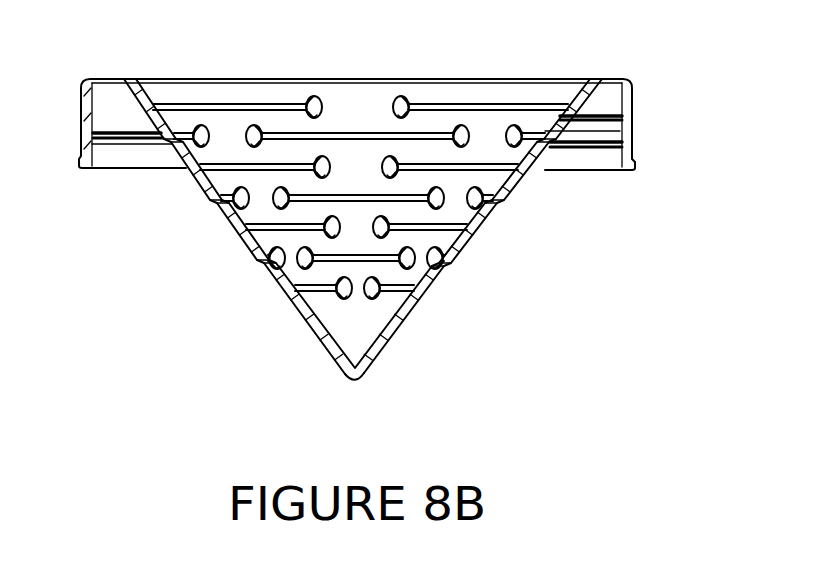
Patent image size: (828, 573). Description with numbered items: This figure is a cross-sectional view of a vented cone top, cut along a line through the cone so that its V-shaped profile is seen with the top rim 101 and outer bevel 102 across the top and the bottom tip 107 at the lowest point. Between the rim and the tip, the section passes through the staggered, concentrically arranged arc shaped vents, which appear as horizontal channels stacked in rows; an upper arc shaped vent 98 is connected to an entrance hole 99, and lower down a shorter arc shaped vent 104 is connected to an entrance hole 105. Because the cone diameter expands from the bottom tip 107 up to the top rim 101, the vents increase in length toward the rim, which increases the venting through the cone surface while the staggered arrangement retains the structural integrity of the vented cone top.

The arc shaped vent 98 is at (213, 103).
The entrance hole 99 is at (312, 95).
The top rim 101 is at (610, 78).
The outer bevel 102 is at (632, 79).
The arc shaped vent 104 is at (315, 292).
The entrance hole 105 is at (348, 300).
The bottom tip 107 is at (388, 402).